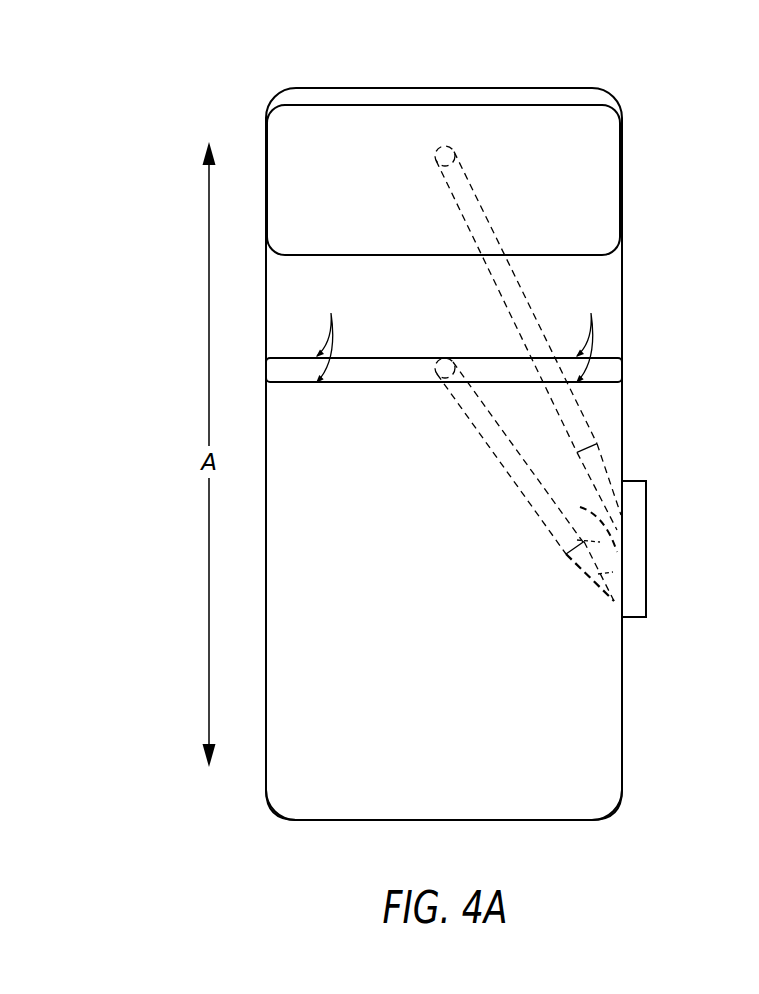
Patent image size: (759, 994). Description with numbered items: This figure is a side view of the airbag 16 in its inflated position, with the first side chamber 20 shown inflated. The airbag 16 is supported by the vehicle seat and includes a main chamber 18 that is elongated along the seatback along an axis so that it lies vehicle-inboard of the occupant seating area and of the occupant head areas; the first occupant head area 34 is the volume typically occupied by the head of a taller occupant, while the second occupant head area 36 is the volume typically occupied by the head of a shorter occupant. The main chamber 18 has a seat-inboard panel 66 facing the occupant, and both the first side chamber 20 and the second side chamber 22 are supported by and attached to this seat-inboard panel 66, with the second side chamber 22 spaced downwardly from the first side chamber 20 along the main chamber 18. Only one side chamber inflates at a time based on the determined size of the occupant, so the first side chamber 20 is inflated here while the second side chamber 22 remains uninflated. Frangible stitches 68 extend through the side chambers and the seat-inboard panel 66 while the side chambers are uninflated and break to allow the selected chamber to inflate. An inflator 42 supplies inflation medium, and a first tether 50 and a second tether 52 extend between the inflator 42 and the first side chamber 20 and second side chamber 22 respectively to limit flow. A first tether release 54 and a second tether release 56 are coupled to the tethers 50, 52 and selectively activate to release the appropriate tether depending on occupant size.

The airbag 16 is at (585, 76).
The main chamber 18 is at (598, 738).
The first side chamber 20 is at (598, 153).
The second side chamber 22 is at (622, 370).
The first occupant head area 34 is at (482, 209).
The second occupant head area 36 is at (481, 437).
The inflator 42 is at (635, 480).
The first tether 50 is at (600, 542).
The second tether 52 is at (613, 602).
The first tether release 54 is at (623, 513).
The second tether release 56 is at (613, 572).
The seat-inboard panel 66 is at (432, 738).
The stitches 68 is at (461, 334).